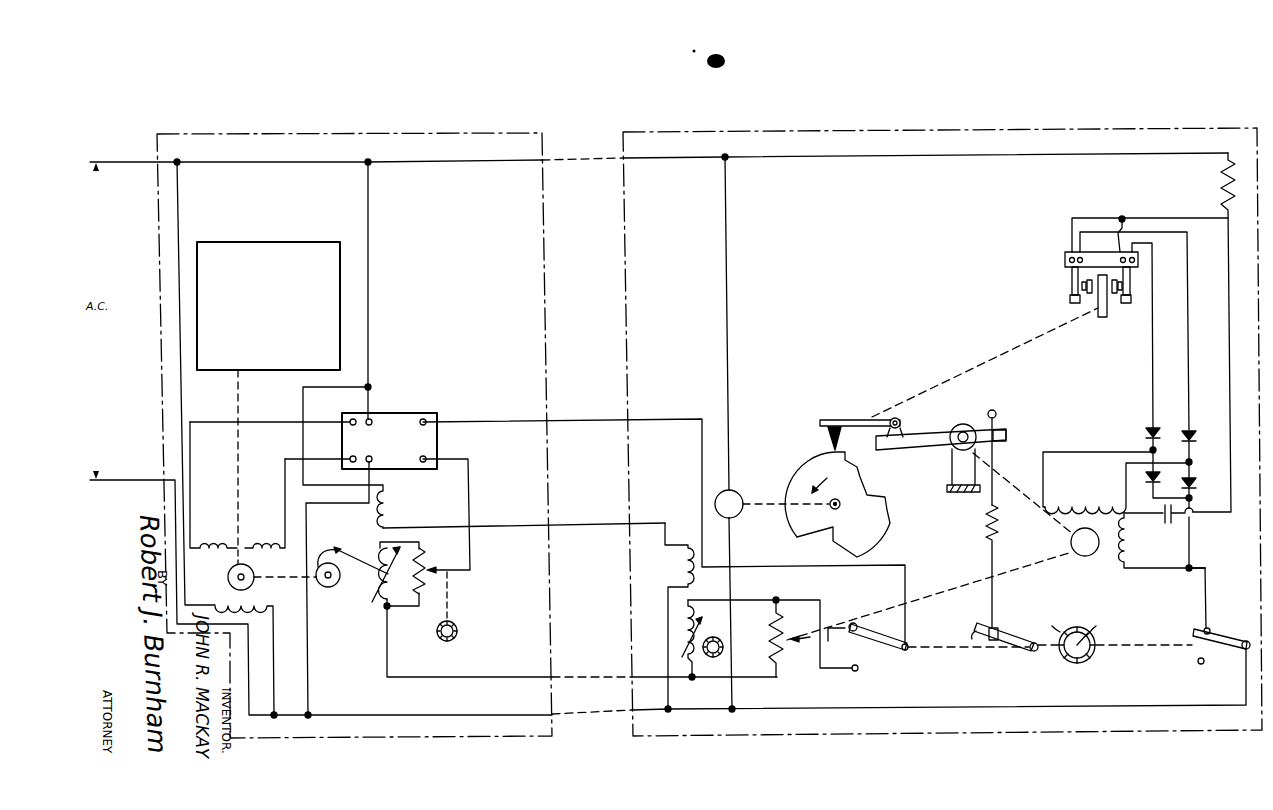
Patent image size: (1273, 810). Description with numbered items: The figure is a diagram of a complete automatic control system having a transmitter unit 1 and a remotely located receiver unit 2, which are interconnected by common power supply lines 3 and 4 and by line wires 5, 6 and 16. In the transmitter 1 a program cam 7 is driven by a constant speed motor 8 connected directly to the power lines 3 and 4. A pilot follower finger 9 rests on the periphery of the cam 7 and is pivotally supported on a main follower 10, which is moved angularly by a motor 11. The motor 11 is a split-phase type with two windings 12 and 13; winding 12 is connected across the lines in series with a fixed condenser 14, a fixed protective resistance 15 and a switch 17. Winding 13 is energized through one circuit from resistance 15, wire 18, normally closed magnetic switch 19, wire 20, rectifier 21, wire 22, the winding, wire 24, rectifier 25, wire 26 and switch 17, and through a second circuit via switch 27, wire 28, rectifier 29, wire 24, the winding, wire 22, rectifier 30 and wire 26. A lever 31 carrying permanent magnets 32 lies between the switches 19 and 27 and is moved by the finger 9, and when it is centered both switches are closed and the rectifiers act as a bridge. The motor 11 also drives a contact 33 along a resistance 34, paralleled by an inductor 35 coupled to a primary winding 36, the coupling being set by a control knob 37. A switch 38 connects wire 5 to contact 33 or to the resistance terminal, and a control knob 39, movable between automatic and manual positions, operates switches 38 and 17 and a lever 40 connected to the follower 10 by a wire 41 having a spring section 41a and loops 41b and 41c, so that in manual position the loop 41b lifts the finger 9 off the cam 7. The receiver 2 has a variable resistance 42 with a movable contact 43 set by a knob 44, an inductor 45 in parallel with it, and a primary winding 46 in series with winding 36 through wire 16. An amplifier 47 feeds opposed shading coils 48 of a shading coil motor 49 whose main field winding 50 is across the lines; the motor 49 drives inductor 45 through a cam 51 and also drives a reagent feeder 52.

The transmitter unit 1 is at (889, 132).
The receiver unit 2 is at (400, 133).
The power supply line 3 is at (552, 155).
The power supply line 4 is at (581, 728).
The line wire 5 is at (916, 573).
The line wire 6 is at (578, 677).
The program cam 7 is at (799, 468).
The constant speed motor 8 is at (740, 497).
The pilot follower finger 9 is at (837, 419).
The main follower 10 is at (900, 455).
The motor 11 is at (1078, 557).
The motor winding 12 is at (1130, 549).
The motor winding 13 is at (1087, 503).
The fixed condenser 14 is at (1167, 525).
The fixed protective resistance 15 is at (1220, 186).
The line wire 16 is at (589, 524).
The switch 17 is at (1222, 632).
The wire 18 is at (1165, 218).
The normally closed magnetic switch 19 is at (1068, 288).
The wire 20 is at (1189, 265).
The rectifier 21 is at (1194, 435).
The wire 22 is at (1192, 463).
The wire 24 is at (1072, 452).
The rectifier 25 is at (1146, 476).
The wire 26 is at (1192, 549).
The normally closed magnetic switch 27 is at (1140, 306).
The wire 28 is at (1150, 375).
The rectifier 29 is at (1146, 429).
The rectifier 30 is at (1196, 487).
The lever 31 is at (1104, 318).
The permanent magnets 32 is at (1106, 307).
The contact 33 is at (800, 645).
The resistance 34 is at (768, 625).
The inductor 35 is at (680, 618).
The primary winding 36 is at (684, 566).
The control knob 37 is at (703, 630).
The switch 38 is at (876, 645).
The control knob 39 is at (1082, 663).
The lever 40 is at (1000, 632).
The wire 41 is at (1003, 451).
The spring section 41a is at (987, 519).
The upper loop 41b is at (998, 414).
The lower loop 41c is at (976, 639).
The variable resistance 42 is at (436, 560).
The movable contact 43 is at (452, 569).
The knob 44 is at (458, 634).
The inductor 45 is at (376, 612).
The primary winding 46 is at (390, 504).
The amplifier 47 is at (398, 412).
The shading coils 48 is at (261, 543).
The shading coil motor 49 is at (228, 578).
The main field winding 50 is at (268, 611).
The cam 51 is at (330, 595).
The reagent feeder 52 is at (271, 242).